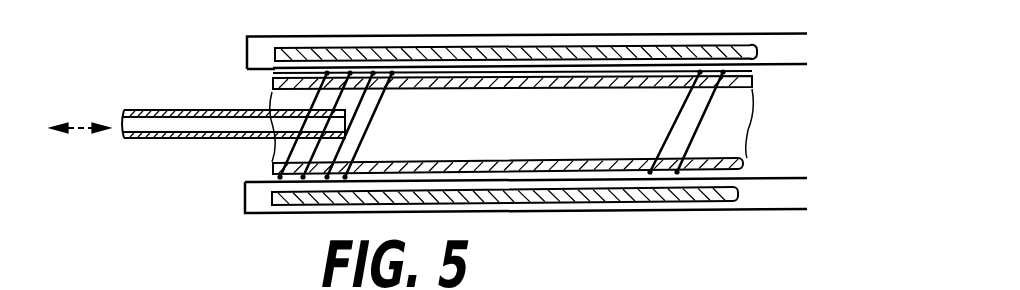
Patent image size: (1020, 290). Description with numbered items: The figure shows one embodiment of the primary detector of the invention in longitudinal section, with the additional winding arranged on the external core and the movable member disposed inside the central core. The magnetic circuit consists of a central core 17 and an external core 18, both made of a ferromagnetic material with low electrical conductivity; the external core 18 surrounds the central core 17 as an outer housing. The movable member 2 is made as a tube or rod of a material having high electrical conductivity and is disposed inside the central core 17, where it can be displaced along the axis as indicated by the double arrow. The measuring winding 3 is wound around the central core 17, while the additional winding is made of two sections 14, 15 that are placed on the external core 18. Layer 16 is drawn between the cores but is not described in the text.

The movable member 2 is at (192, 109).
The measuring winding 3 is at (677, 172).
The first section of additional winding 14 is at (792, 35).
The second section of additional winding 15 is at (768, 180).
The upper insulating layer 16 is at (545, 47).
The central core 17 is at (272, 167).
The external core 18 is at (505, 238).